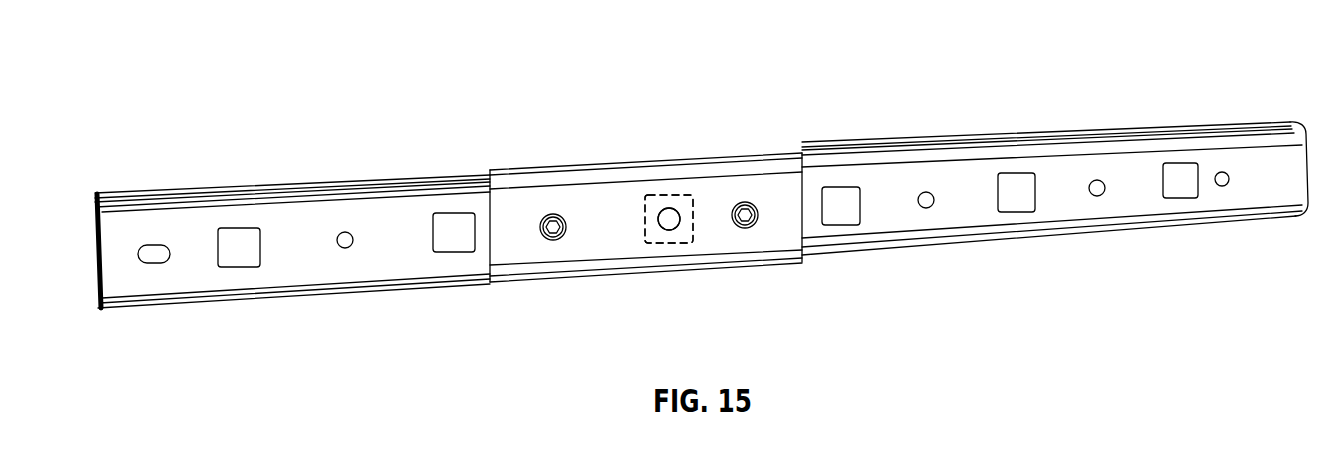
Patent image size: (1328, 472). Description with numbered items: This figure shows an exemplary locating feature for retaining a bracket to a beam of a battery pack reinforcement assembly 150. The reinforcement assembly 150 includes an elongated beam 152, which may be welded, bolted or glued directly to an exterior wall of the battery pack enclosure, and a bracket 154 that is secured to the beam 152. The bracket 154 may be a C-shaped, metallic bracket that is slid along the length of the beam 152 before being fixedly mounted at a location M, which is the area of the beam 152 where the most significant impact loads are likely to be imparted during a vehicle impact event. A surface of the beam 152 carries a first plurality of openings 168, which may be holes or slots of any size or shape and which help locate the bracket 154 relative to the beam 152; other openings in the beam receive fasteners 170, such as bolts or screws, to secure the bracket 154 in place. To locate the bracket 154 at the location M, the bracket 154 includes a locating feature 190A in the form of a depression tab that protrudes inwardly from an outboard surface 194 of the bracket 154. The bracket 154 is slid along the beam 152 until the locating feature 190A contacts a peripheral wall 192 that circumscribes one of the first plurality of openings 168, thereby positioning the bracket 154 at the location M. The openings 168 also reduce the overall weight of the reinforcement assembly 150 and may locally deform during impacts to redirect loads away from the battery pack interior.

The reinforcement assembly 150 is at (973, 106).
The beam 152 is at (1073, 153).
The bracket 154 is at (767, 136).
The first plurality of openings 168 is at (676, 190).
The fasteners 170 is at (562, 233).
The locating feature 190A is at (670, 232).
The peripheral wall 192 is at (694, 222).
The outboard surface 194 is at (502, 255).
The location M is at (468, 164).